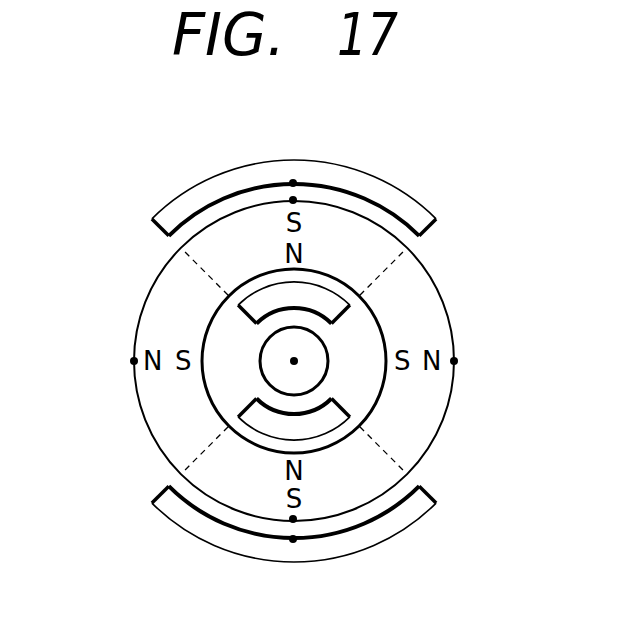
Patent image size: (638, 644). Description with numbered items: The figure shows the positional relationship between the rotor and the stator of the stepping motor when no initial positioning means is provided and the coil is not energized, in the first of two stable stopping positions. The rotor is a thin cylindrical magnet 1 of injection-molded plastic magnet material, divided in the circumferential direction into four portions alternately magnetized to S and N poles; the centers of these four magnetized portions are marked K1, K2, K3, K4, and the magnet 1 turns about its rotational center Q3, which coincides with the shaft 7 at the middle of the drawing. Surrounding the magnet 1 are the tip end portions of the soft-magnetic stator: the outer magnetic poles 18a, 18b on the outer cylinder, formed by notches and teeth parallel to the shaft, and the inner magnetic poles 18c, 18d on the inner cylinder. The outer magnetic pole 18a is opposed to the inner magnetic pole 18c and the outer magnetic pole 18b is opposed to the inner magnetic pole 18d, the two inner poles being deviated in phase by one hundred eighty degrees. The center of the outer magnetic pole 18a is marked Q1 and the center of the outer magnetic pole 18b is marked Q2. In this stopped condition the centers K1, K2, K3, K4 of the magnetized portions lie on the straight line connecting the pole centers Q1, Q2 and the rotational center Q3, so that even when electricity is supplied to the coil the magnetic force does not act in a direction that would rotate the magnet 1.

The cylindrical magnet 1 is at (150, 265).
The rotor shaft 7 is at (262, 370).
The outer magnetic pole 18a is at (405, 202).
The outer magnetic pole 18b is at (382, 532).
The inner magnetic pole 18c is at (333, 308).
The inner magnetic pole 18d is at (333, 415).
The center of the outer magnetic pole 18a Q1 is at (293, 183).
The center of the outer magnetic pole 18b Q2 is at (293, 539).
The rotational center of the magnet Q3 is at (290, 360).
The center of the magnetized portion K1 is at (293, 200).
The center of the magnetized portion K2 is at (134, 361).
The center of the magnetized portion K3 is at (293, 519).
The center of the magnetized portion K4 is at (454, 361).